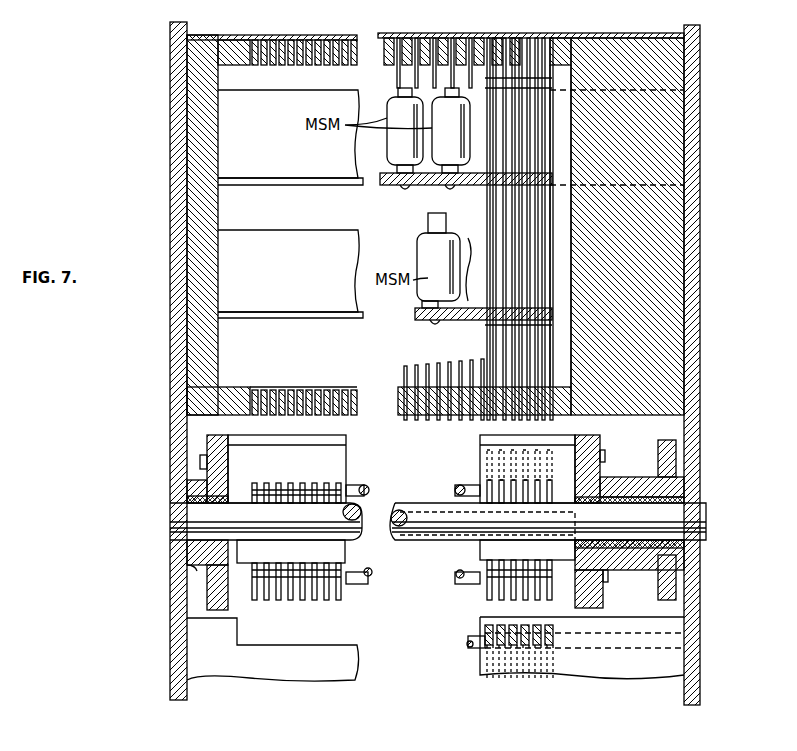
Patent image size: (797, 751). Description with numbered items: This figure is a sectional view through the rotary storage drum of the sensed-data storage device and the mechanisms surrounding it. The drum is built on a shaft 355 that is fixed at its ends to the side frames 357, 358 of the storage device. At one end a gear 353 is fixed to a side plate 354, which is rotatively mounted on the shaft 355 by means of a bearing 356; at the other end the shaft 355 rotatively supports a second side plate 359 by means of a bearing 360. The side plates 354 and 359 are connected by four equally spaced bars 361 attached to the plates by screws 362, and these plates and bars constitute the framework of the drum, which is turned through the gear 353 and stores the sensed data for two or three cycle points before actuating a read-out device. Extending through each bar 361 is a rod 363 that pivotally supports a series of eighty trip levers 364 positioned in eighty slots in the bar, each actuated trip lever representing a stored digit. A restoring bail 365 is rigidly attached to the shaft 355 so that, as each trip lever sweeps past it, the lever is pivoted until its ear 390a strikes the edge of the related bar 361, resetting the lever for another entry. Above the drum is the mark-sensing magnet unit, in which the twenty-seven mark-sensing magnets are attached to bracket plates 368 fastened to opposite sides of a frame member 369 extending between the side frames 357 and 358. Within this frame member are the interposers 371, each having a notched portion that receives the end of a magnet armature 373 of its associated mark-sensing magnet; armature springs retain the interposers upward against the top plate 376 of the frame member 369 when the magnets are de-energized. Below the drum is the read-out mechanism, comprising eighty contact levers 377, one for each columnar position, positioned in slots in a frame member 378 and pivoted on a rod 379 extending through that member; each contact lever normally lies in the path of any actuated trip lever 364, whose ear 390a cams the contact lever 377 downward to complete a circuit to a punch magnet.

The top plate 376 is at (528, 33).
The frame member 369 is at (682, 123).
The bracket plates 368 is at (325, 185).
The magnet armature 373 is at (438, 213).
The interposers 371 is at (500, 342).
The side frame 358 is at (172, 462).
The bearing 360 is at (190, 500).
The shaft 355 is at (172, 521).
The trip levers 364 is at (274, 483).
The bars 361 is at (346, 462).
The rod 363 is at (366, 488).
The restoring bail 365 is at (346, 553).
The ear 390a is at (340, 598).
The side plate 359 is at (230, 602).
The frame member 378 is at (340, 682).
The screws 362 is at (605, 456).
The side frame 357 is at (700, 462).
The bearing 356 is at (686, 497).
The side plate 354 is at (634, 562).
The gear 353 is at (658, 582).
The contact levers 377 is at (490, 626).
The rod 379 is at (470, 638).